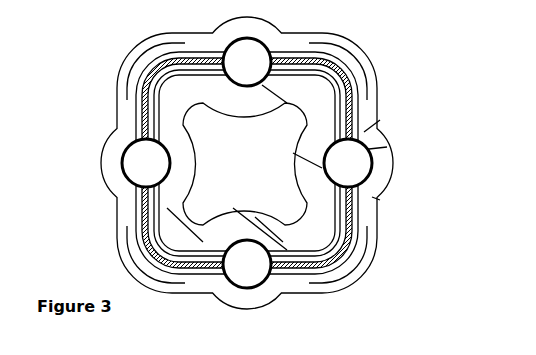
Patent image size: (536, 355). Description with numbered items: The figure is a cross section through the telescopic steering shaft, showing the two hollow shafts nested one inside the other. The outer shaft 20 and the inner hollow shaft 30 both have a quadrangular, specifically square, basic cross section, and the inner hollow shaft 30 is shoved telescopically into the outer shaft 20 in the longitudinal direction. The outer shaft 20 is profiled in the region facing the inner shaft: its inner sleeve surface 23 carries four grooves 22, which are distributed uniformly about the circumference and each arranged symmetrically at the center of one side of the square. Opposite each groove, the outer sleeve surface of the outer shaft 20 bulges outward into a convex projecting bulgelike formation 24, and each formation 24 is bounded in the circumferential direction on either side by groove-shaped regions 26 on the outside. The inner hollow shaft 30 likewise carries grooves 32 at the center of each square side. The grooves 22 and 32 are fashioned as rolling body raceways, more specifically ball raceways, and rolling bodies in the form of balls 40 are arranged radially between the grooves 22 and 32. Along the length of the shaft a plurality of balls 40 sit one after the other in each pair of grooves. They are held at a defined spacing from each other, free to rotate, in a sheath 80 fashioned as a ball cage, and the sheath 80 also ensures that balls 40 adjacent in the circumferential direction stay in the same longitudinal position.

The outer shaft 20 is at (128, 88).
The grooves 22 is at (360, 178).
The inner sleeve surface 23 is at (332, 66).
The bulgelike formations 24 is at (387, 147).
The groove-shaped regions 26 is at (380, 120).
The inner hollow shaft 30 is at (148, 70).
The grooves 32 is at (182, 150).
The balls 40 is at (143, 166).
The sheath 80 is at (127, 211).